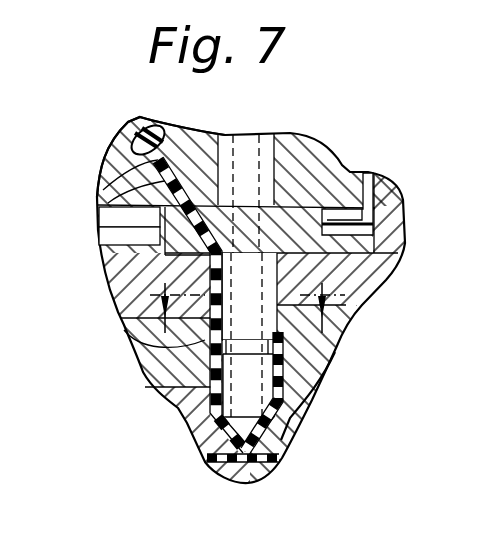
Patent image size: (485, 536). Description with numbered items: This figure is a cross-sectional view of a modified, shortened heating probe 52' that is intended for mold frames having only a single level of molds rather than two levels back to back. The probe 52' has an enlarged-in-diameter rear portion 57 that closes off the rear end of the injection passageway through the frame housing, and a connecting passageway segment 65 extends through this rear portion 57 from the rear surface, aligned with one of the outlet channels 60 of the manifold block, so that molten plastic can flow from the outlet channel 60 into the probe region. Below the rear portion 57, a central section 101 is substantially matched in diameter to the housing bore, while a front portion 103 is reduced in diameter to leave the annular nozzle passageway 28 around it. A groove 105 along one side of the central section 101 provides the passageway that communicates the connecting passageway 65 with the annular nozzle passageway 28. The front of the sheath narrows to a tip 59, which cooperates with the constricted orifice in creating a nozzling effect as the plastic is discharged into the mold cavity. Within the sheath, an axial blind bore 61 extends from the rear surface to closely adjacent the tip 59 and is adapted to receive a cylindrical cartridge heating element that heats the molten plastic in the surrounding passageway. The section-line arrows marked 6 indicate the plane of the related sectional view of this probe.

The probe 52' is at (216, 298).
The enlarged-in-diameter rear portion 57 is at (346, 165).
The outlet channel 60 is at (100, 188).
The connecting passageway segment 65 is at (99, 237).
The groove 105 is at (138, 356).
The central section 101 is at (344, 300).
The axial blind bore 61 is at (145, 400).
The nozzle passageway 28 is at (182, 422).
The front portion 103 is at (285, 412).
The tip 59 is at (222, 482).
The section line 6- 6 is at (247, 323).